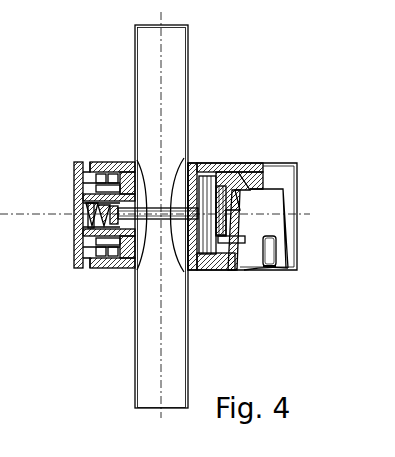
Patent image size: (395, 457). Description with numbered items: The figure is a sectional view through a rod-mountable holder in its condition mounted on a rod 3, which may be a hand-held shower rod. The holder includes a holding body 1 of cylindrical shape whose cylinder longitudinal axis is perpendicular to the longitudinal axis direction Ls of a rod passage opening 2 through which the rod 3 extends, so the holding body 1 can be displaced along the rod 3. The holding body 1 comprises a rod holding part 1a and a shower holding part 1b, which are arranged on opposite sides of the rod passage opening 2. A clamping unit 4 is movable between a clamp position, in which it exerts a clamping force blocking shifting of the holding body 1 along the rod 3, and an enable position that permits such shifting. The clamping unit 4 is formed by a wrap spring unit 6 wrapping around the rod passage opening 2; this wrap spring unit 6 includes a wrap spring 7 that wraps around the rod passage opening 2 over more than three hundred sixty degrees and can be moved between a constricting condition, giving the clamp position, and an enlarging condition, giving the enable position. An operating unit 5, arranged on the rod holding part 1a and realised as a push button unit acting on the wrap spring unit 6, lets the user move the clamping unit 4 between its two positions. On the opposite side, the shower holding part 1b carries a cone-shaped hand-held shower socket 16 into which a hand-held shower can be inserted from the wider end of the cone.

The holding body 1 is at (217, 214).
The rod holding part 1a is at (135, 268).
The shower holding part 1b is at (244, 163).
The rod passage opening 2 is at (184, 268).
The rod 3 is at (188, 72).
The clamping unit 4 is at (133, 165).
The operating unit 5 is at (79, 194).
The wrap spring unit 6 is at (186, 168).
The wrap spring 7 is at (136, 270).
The hand-held shower socket 16 is at (275, 225).
The longitudinal axis direction Ls is at (163, 316).